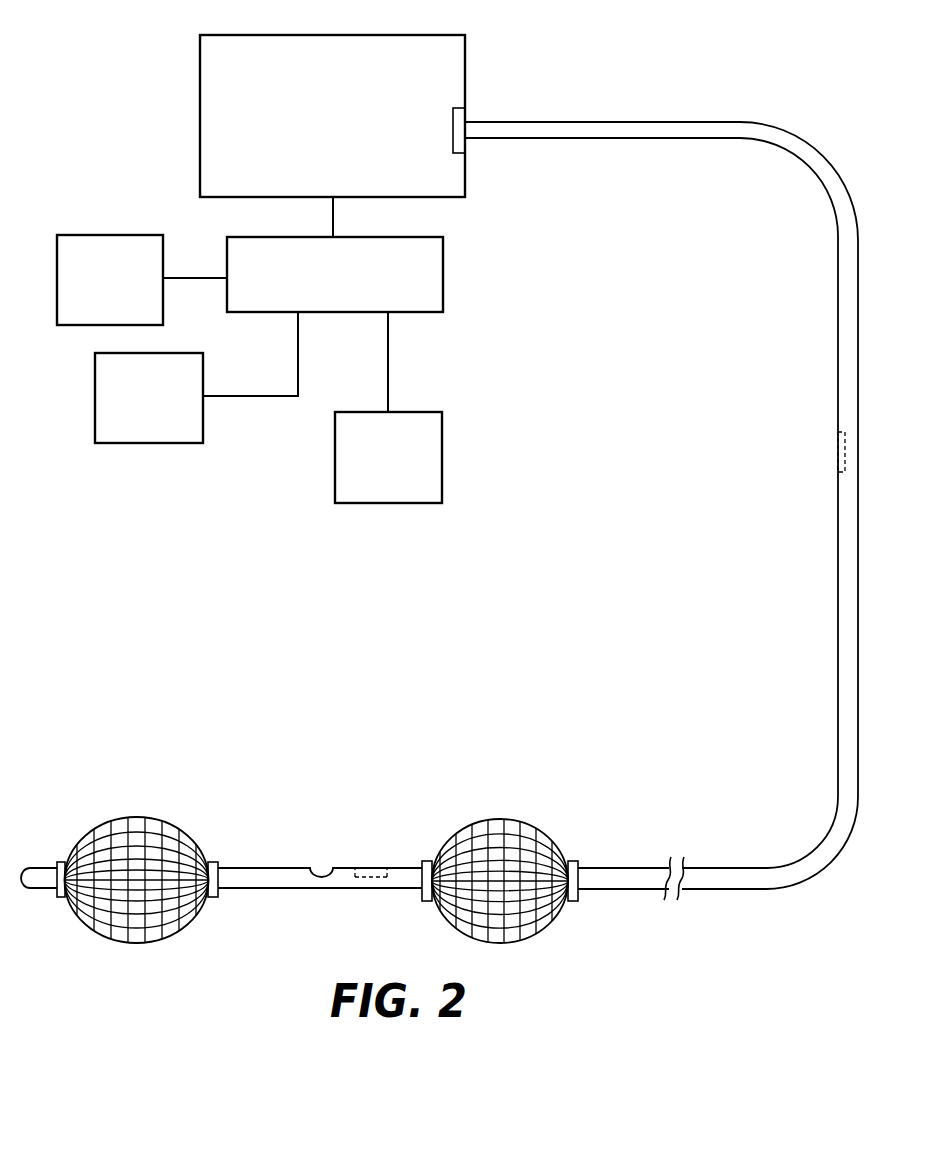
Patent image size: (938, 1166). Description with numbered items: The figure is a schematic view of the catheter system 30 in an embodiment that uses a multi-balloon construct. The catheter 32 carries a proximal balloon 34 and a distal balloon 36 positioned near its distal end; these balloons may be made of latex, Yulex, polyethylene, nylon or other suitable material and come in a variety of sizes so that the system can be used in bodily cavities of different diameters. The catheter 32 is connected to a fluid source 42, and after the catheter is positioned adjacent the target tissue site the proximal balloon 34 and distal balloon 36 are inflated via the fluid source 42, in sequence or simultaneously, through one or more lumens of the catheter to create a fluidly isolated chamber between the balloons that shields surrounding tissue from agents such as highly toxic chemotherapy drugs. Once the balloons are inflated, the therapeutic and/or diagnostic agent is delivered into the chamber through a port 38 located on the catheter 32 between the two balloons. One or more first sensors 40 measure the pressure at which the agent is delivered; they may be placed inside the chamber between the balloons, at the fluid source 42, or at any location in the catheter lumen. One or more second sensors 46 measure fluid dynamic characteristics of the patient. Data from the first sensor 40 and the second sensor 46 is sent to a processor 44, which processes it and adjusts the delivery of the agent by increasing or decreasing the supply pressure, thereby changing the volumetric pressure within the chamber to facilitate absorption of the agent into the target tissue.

The catheter system 30 is at (780, 114).
The catheter 32 is at (838, 364).
The proximal balloon 34 is at (533, 845).
The distal balloon 36 is at (176, 848).
The port 38 is at (321, 866).
The first sensor 40 is at (460, 112).
The fluid source 42 is at (453, 62).
The processor 44 is at (443, 278).
The second sensor 46 is at (100, 234).